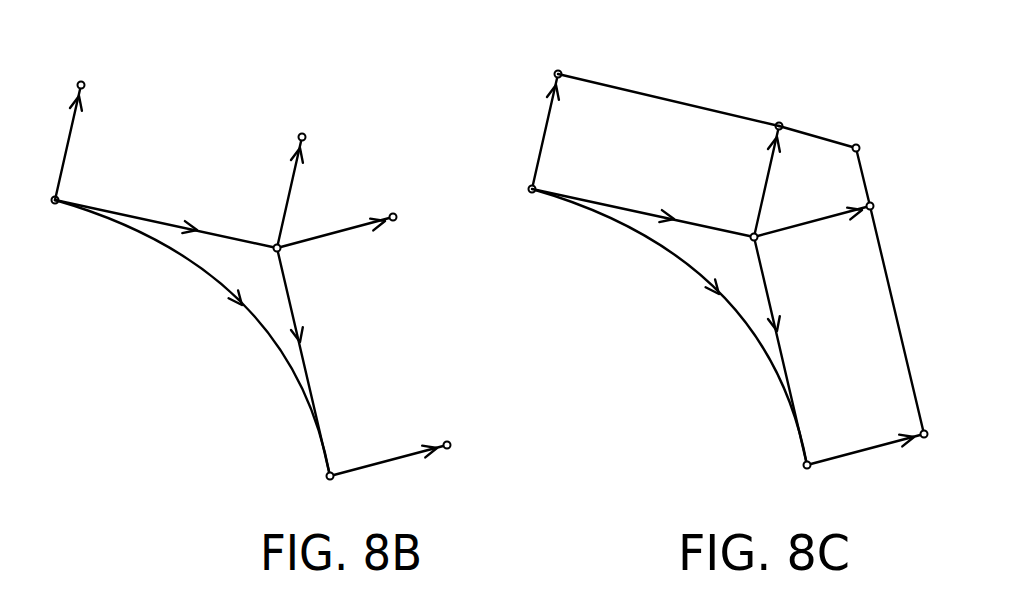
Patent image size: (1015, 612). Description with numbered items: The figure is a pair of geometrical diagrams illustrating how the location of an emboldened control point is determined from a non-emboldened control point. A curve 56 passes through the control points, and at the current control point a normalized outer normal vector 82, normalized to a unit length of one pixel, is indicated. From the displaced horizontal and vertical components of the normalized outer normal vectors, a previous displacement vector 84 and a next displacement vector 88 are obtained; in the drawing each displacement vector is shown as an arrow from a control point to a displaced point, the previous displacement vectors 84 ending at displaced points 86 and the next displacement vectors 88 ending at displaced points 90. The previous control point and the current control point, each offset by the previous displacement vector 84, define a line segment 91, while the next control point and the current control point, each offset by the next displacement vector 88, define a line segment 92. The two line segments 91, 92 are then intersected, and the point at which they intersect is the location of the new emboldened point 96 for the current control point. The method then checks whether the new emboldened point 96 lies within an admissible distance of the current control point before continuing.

In FIG. 8B, the curve 56 is at (283, 375).
In FIG. 8C, the curve 56 is at (752, 358).
In FIG. 8B, the normalized outer normal vector 82 is at (0, 271).
In FIG. 8B, the previous displacement vector 84 is at (55, 147).
In FIG. 8C, the previous displacement vector 84 is at (532, 138).
In FIG. 8B, the end point of first vector 86 is at (83, 72).
In FIG. 8C, the end point of first vector 86 is at (557, 62).
In FIG. 8B, the next displacement vector 88 is at (323, 227).
In FIG. 8C, the next displacement vector 88 is at (807, 233).
In FIG. 8B, the end point of second vector 90 is at (449, 437).
In FIG. 8C, the end point of second vector 90 is at (932, 433).
In FIG. 8C, the line segment 91 is at (654, 88).
In FIG. 8C, the line segment 92 is at (898, 287).
In FIG. 8C, the new emboldened point 96 is at (859, 142).